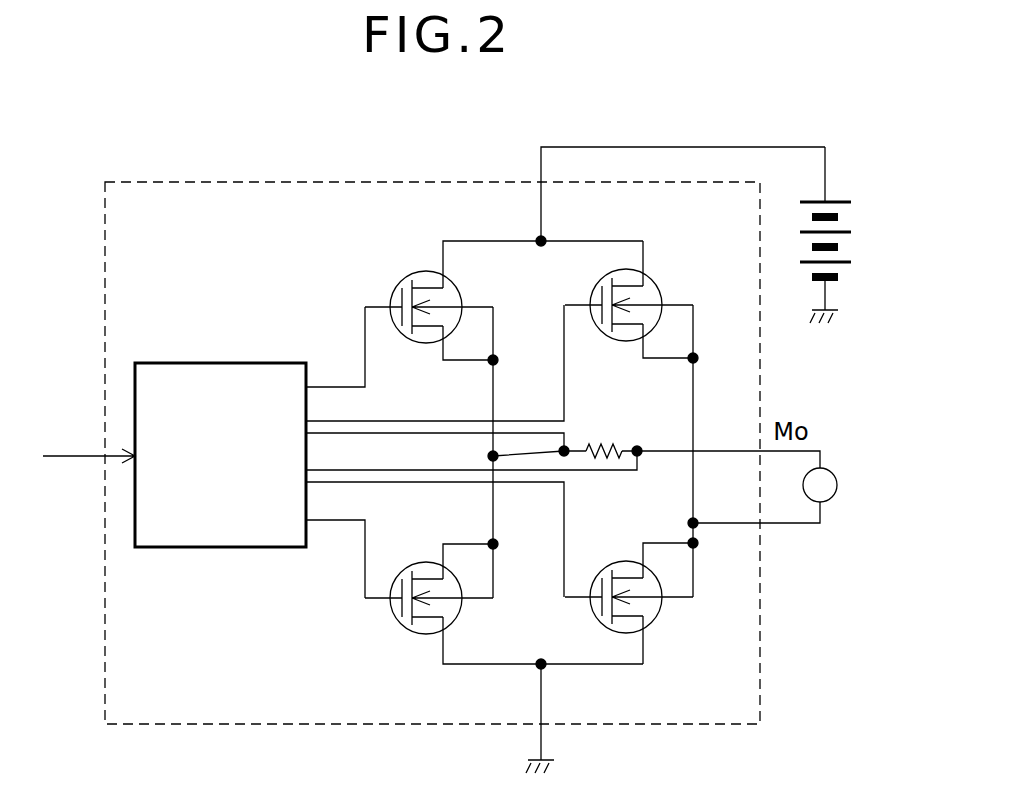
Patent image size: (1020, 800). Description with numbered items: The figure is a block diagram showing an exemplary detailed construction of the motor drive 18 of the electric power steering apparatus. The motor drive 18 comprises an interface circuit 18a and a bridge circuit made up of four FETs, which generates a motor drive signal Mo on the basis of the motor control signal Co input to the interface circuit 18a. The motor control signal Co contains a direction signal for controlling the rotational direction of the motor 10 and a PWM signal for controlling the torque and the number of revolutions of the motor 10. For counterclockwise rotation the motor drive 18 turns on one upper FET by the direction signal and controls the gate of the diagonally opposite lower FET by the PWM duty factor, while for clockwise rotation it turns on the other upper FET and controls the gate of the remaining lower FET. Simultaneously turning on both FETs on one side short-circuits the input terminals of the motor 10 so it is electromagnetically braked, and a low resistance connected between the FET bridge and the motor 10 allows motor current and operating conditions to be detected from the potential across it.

The motor drive 18 is at (303, 182).
The interface circuit 18a is at (209, 548).
The motor 10 is at (838, 485).